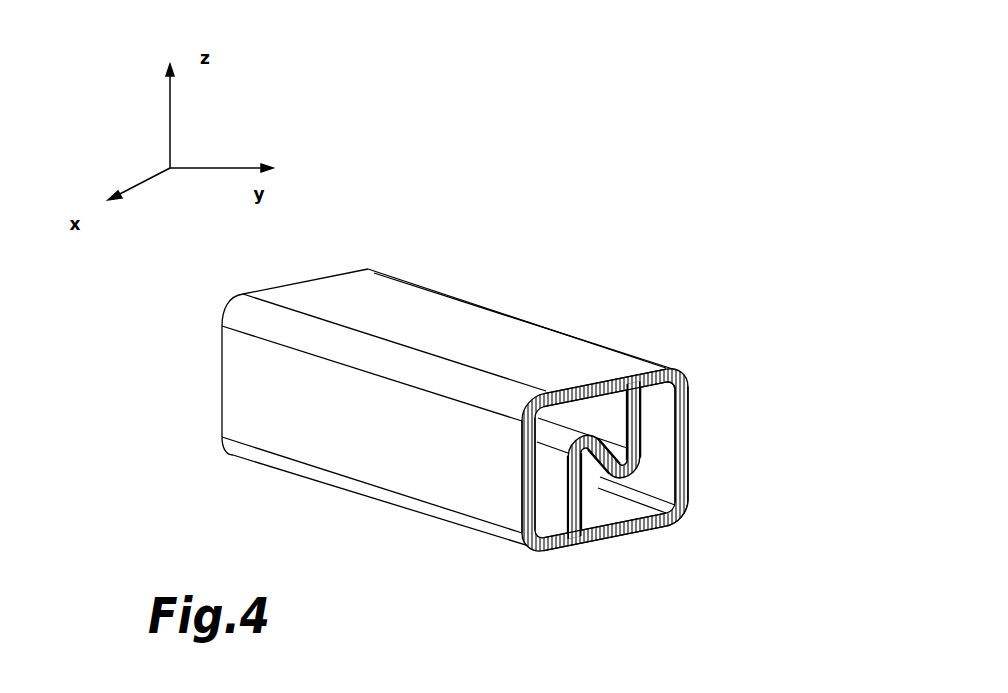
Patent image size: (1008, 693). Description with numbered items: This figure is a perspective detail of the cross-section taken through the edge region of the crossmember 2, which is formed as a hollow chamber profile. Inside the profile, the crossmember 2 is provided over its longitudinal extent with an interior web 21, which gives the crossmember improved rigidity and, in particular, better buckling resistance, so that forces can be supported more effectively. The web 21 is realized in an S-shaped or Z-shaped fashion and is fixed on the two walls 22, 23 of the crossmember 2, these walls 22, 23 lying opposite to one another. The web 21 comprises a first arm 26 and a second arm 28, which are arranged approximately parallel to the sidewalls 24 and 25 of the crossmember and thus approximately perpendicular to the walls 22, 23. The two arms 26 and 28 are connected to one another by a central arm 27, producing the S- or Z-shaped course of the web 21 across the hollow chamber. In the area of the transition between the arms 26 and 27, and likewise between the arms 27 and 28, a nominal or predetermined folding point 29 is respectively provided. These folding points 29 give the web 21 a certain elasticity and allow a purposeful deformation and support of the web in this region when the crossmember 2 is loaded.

The crossmember 2 is at (397, 318).
The interior web 21 is at (647, 408).
The wall 22 is at (602, 372).
The wall 23 is at (593, 547).
The sidewall 24 is at (571, 472).
The sidewall 25 is at (688, 453).
The first arm 26 is at (570, 502).
The central arm 27 is at (686, 511).
The second arm 28 is at (644, 430).
The predetermined folding point 29 is at (625, 477).